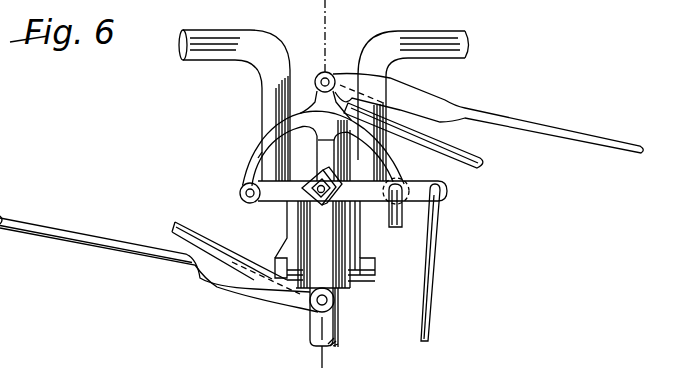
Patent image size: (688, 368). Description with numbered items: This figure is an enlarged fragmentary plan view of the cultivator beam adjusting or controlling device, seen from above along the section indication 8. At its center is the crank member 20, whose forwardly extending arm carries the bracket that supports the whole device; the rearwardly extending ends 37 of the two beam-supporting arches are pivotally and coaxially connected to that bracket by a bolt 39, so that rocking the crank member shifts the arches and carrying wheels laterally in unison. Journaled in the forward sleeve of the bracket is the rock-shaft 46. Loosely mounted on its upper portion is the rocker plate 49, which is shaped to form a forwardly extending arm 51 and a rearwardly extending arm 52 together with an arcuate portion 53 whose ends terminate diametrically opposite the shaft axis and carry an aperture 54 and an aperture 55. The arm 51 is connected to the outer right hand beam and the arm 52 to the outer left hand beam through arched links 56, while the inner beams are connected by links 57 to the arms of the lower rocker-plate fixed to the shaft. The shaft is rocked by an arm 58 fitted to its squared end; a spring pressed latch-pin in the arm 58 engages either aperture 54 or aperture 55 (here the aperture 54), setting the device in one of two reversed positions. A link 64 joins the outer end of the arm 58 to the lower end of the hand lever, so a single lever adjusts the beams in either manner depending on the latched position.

The section line 8 is at (332, 21).
The crank member 20 is at (333, 324).
The rearwardly extending ends 37 is at (262, 88).
The bolt 39 is at (368, 272).
The rock-shaft 46 is at (306, 180).
The rocker plate 49 is at (246, 172).
The forwardly extending arm 51 is at (318, 140).
The rearwardly extending arm 52 is at (322, 232).
The arcuate portion 53 is at (258, 158).
The aperture 54 is at (406, 181).
The aperture 55 is at (240, 193).
The arched links 56 is at (572, 132).
The links 57 is at (484, 158).
The arm 58 is at (420, 206).
The link 64 is at (483, 274).